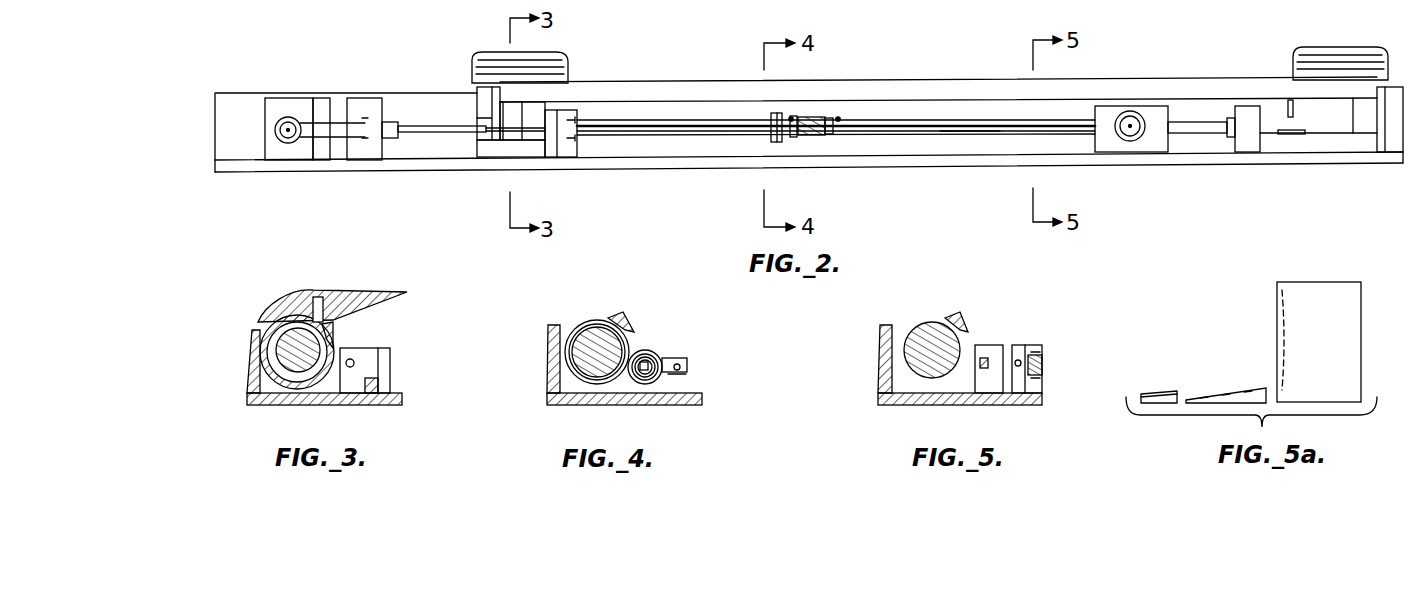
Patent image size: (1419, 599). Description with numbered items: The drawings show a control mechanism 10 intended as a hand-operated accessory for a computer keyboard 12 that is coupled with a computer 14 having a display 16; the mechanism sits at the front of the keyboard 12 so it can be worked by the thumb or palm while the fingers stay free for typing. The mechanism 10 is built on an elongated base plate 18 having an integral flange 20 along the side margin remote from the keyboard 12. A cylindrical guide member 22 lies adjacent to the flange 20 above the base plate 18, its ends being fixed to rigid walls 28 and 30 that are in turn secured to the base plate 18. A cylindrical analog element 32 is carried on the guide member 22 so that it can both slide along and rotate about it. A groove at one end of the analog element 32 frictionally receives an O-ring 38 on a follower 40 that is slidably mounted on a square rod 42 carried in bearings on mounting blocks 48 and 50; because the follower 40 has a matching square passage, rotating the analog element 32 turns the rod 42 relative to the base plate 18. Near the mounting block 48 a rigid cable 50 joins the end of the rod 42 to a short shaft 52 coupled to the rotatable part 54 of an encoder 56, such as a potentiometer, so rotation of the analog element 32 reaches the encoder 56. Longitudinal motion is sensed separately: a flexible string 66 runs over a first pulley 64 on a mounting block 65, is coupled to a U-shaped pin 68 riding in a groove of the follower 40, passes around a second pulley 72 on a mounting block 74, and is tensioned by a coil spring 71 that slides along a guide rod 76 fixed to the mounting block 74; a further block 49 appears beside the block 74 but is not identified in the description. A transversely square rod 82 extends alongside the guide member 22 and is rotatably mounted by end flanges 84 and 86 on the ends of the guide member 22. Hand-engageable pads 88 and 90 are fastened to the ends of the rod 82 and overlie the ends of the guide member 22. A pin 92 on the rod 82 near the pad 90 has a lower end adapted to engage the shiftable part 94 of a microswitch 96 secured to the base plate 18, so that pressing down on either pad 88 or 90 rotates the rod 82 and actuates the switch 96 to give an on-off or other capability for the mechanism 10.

In FIG. 2, the control mechanism 10 is at (666, 66).
In FIG. 3, the control mechanism 10 is at (423, 302).
In FIG. 4, the control mechanism 10 is at (658, 326).
In FIG. 5, the control mechanism 10 is at (1016, 316).
In FIG. 5A, the control mechanism 10 is at (1162, 383).
In FIG. 5A, the computer keyboard 12 is at (1227, 388).
In FIG. 5A, the computer 14 is at (1292, 282).
In FIG. 5A, the display 16 is at (1279, 322).
In FIG. 2, the base plate 18 is at (638, 166).
In FIG. 3, the base plate 18 is at (288, 407).
In FIG. 4, the base plate 18 is at (606, 406).
In FIG. 3, the flange 20 is at (252, 360).
In FIG. 4, the flange 20 is at (553, 360).
In FIG. 3, the cylindrical guide member 22 is at (298, 340).
In FIG. 4, the cylindrical guide member 22 is at (596, 335).
In FIG. 5, the cylindrical guide member 22 is at (927, 322).
In FIG. 2, the rigid wall 28 is at (477, 105).
In FIG. 2, the rigid wall 30 is at (1394, 142).
In FIG. 4, the cylindrical analog element 32 is at (580, 328).
In FIG. 2, the O-ring 38 is at (778, 113).
In FIG. 4, the O-ring 38 is at (646, 385).
In FIG. 2, the follower 40 is at (786, 140).
In FIG. 2, the rod 42 is at (1200, 122).
In FIG. 3, the rod 42 is at (335, 330).
In FIG. 4, the rod 42 is at (655, 357).
In FIG. 5, the rod 42 is at (983, 368).
In FIG. 3, the mounting block 48 is at (372, 368).
In FIG. 5, the mounting block 49 is at (996, 350).
In FIG. 2, the mounting block 50 is at (548, 118).
In FIG. 3, the mounting block 50 is at (356, 360).
In FIG. 2, the short shaft 52 is at (424, 134).
In FIG. 2, the rotatable part 54 is at (400, 124).
In FIG. 2, the encoder 56 is at (366, 100).
In FIG. 2, the first pulley 64 is at (288, 117).
In FIG. 2, the mounting block 65 is at (307, 155).
In FIG. 2, the flexible cable or string 66 is at (338, 145).
In FIG. 4, the flexible cable or string 66 is at (692, 365).
In FIG. 5, the flexible cable or string 66 is at (1050, 364).
In FIG. 4, the U-shaped pin 68 is at (672, 378).
In FIG. 2, the coil spring 71 is at (835, 137).
In FIG. 2, the second pulley 72 is at (1134, 142).
In FIG. 5, the second pulley 72 is at (1043, 373).
In FIG. 2, the mounting block 74 is at (1160, 150).
In FIG. 5, the mounting block 74 is at (1040, 346).
In FIG. 2, the rod 76 is at (958, 128).
In FIG. 5, the rod 76 is at (1020, 367).
In FIG. 2, the transversely square rod 82 is at (885, 90).
In FIG. 4, the transversely square rod 82 is at (628, 316).
In FIG. 5, the transversely square rod 82 is at (960, 314).
In FIG. 3, the end flange 84 is at (262, 376).
In FIG. 2, the end flange 86 is at (1362, 125).
In FIG. 2, the hand-engageable pad 88 is at (550, 54).
In FIG. 3, the hand-engageable pad 88 is at (333, 295).
In FIG. 2, the hand-engageable pad 90 is at (1333, 48).
In FIG. 2, the pin 92 is at (1287, 102).
In FIG. 2, the shiftable part 94 is at (1293, 130).
In FIG. 2, the microswitch 96 is at (1285, 140).